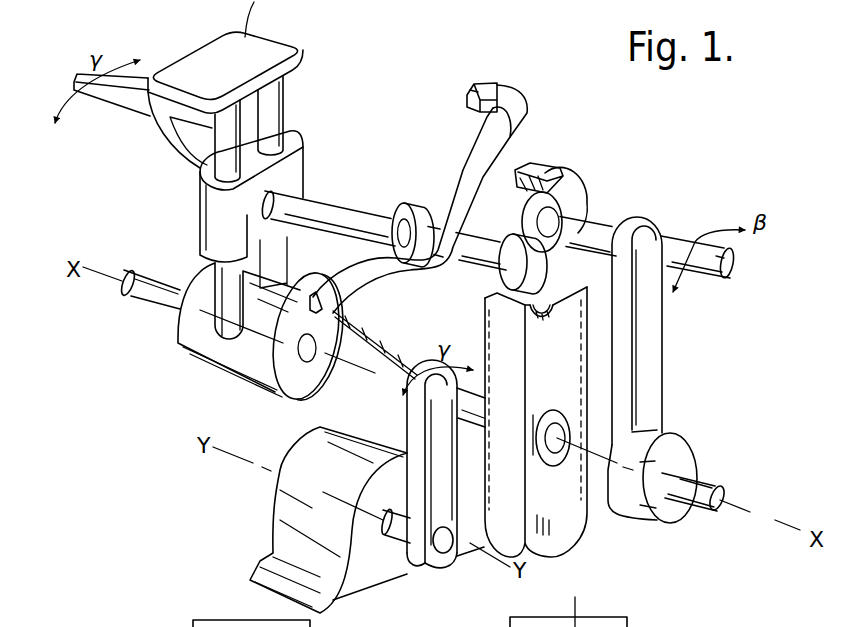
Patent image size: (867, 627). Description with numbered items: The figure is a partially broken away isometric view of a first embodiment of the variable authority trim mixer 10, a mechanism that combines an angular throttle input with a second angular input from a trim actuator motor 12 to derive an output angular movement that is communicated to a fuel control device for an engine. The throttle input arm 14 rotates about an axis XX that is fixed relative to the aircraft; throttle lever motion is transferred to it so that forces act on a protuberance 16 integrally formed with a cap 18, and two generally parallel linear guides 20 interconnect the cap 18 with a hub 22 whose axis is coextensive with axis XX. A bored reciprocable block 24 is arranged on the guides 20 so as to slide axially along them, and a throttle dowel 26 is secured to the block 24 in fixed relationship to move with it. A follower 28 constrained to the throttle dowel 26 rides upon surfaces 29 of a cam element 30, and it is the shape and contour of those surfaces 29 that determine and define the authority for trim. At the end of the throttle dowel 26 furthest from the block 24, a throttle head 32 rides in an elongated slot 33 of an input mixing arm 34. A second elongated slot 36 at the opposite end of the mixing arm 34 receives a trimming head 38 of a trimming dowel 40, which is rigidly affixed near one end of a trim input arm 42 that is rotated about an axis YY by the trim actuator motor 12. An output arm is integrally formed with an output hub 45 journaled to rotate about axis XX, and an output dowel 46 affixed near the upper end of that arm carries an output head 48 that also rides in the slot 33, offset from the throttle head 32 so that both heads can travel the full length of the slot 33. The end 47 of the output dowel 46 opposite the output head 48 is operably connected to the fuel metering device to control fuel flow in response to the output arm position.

The variable authority trim mixer 10 is at (532, 57).
The trim actuator motor 12 is at (335, 575).
The throttle input arm 14 is at (282, 36).
The protuberance 16 is at (130, 83).
The cap 18 is at (197, 620).
The linear guides 20 is at (283, 118).
The hub 22 is at (193, 347).
The bored reciprocable block 24 is at (298, 168).
The throttle dowel 26 is at (297, 198).
The follower 28 is at (412, 207).
The surfaces 29 is at (485, 117).
The cam element 30 is at (505, 157).
The throttle head 32 is at (500, 263).
The elongated slot 33 is at (552, 290).
The input mixing arm 34 is at (570, 180).
The second elongated slot 36 is at (572, 492).
The trimming head 38 is at (565, 442).
The trimming dowel 40 is at (470, 430).
The trim input arm 42 is at (410, 393).
The output hub 45 is at (693, 443).
The output dowel 46 is at (670, 243).
The end 47 is at (724, 282).
The output head 48 is at (576, 215).